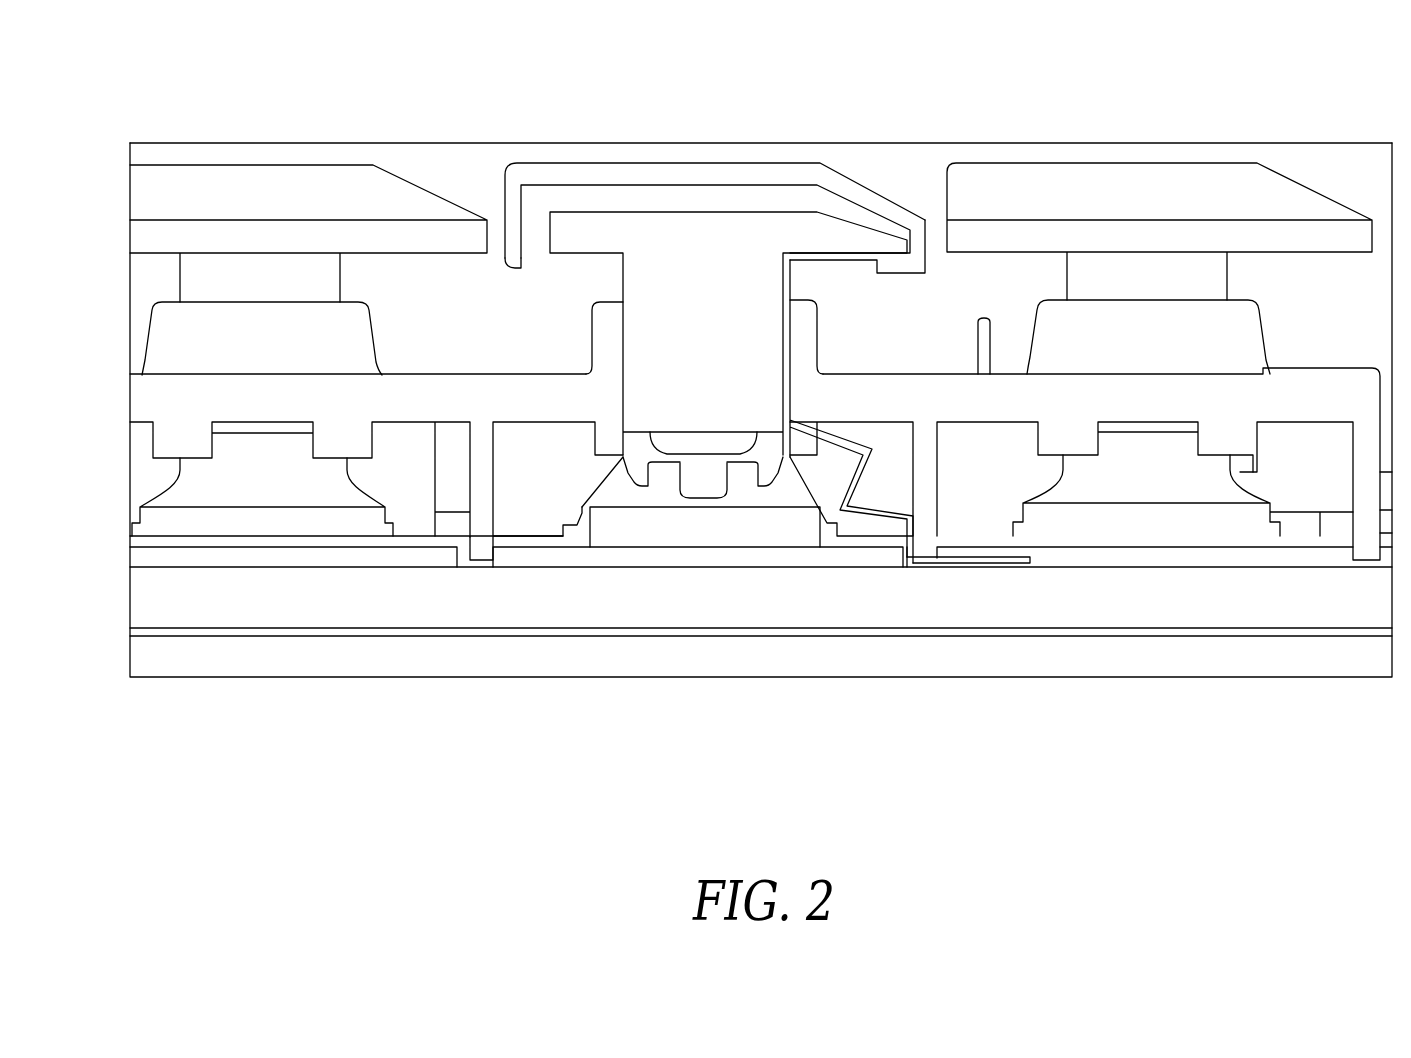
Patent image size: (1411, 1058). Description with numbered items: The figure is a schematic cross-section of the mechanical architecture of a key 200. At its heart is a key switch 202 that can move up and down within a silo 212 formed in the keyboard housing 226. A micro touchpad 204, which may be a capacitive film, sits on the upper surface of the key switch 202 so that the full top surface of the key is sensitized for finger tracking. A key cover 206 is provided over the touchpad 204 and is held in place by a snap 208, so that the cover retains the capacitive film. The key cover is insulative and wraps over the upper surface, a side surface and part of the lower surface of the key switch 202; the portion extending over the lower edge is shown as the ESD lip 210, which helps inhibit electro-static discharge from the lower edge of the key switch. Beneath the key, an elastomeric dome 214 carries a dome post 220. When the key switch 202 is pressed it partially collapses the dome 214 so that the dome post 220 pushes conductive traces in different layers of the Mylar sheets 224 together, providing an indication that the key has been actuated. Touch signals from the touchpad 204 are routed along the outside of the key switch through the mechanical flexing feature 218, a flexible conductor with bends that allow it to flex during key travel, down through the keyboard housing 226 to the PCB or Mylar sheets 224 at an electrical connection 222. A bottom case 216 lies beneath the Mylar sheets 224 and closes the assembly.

The key 200 is at (690, 150).
The key switch 202 is at (753, 323).
The micro touchpad 204 is at (568, 187).
The key cover 206 is at (513, 172).
The snap 208 is at (508, 254).
The ESD lip 210 is at (921, 268).
The silo 212 is at (598, 355).
The elastomeric dome 214 is at (582, 508).
The bottom case 216 is at (142, 607).
The mechanical flexing feature 218 is at (835, 440).
The dome post 220 is at (718, 482).
The electrical connection to PCB or mylar 222 is at (1010, 565).
The Mylar sheets 224 is at (583, 555).
The keyboard housing 226 is at (803, 277).